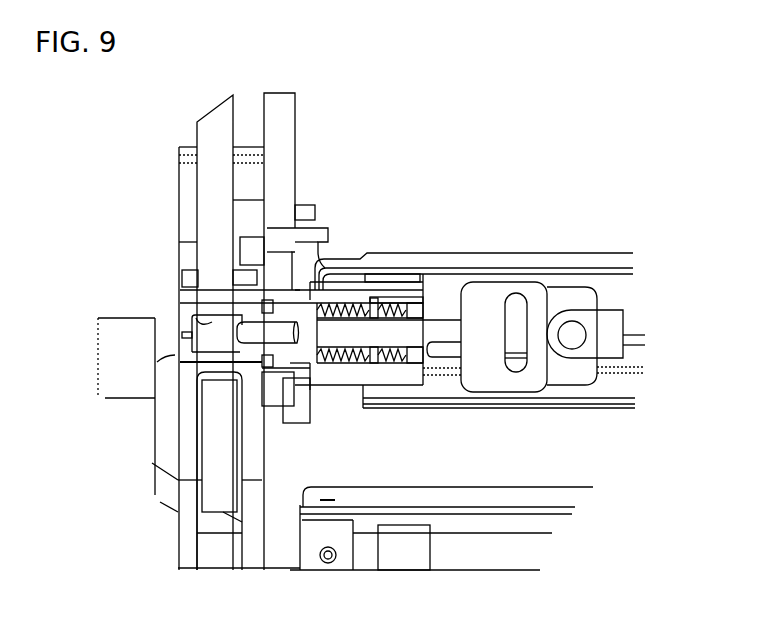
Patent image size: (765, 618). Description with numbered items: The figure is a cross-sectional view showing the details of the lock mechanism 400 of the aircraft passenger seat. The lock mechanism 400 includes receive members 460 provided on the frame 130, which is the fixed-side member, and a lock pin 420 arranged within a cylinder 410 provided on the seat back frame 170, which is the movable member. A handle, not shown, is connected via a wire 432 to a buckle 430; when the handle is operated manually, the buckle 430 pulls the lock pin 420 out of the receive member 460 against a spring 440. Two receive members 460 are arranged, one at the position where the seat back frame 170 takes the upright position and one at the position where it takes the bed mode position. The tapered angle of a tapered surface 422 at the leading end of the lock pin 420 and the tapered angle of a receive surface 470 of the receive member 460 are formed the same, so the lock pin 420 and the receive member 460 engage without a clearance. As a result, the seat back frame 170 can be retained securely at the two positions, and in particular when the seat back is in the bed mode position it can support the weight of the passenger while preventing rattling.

The frame 130 is at (208, 178).
The seat back frame 170 is at (282, 135).
The lock mechanism 400 is at (500, 135).
The cylinder 410 is at (343, 378).
The lock pin 420 is at (303, 327).
The tapered surface 422 is at (240, 348).
The buckle 430 is at (608, 317).
The wire 432 is at (642, 337).
The spring 440 is at (375, 307).
The receive member 460 is at (205, 315).
The receive surface 470 is at (192, 325).